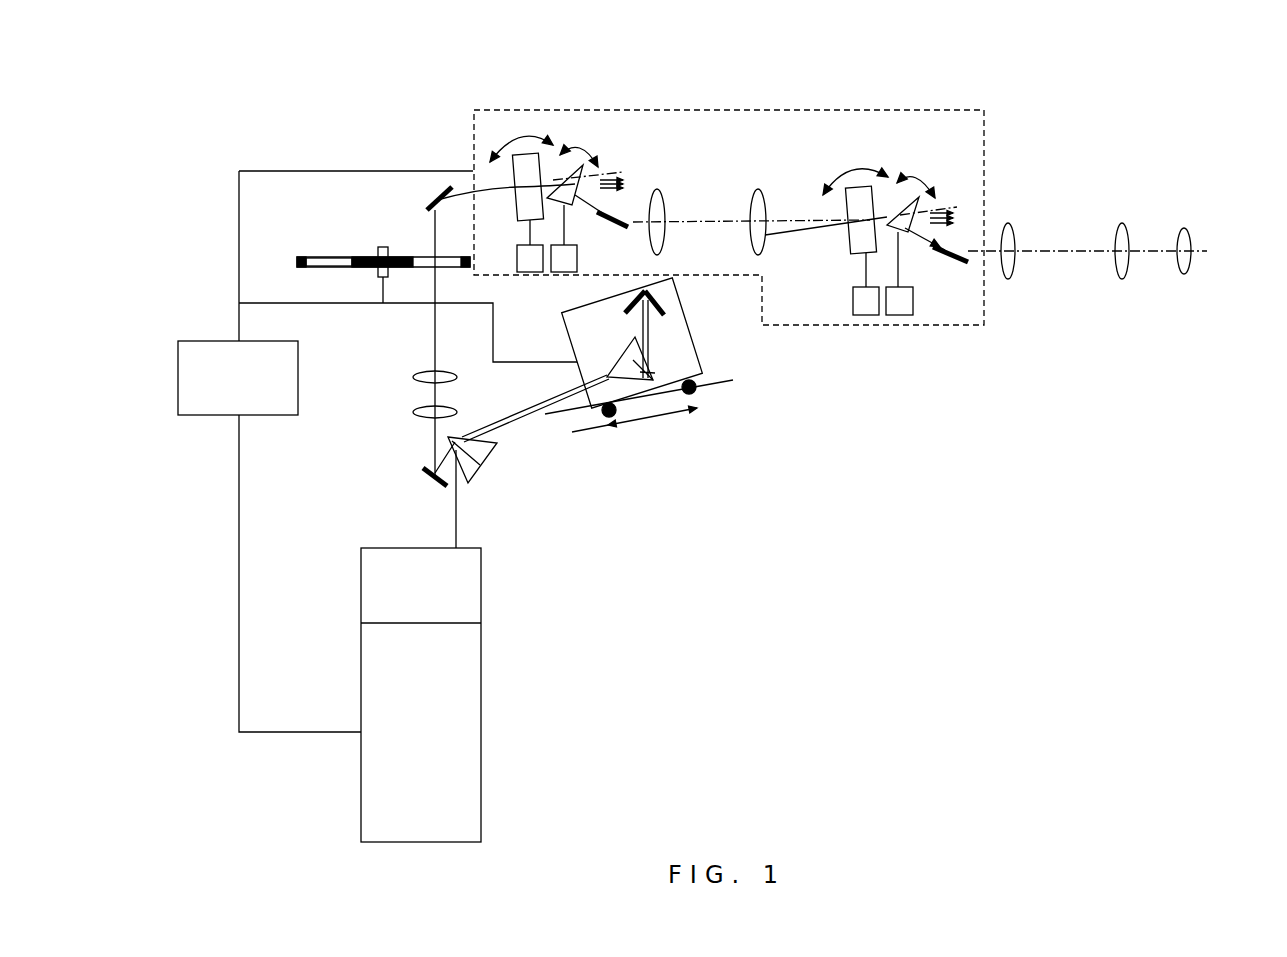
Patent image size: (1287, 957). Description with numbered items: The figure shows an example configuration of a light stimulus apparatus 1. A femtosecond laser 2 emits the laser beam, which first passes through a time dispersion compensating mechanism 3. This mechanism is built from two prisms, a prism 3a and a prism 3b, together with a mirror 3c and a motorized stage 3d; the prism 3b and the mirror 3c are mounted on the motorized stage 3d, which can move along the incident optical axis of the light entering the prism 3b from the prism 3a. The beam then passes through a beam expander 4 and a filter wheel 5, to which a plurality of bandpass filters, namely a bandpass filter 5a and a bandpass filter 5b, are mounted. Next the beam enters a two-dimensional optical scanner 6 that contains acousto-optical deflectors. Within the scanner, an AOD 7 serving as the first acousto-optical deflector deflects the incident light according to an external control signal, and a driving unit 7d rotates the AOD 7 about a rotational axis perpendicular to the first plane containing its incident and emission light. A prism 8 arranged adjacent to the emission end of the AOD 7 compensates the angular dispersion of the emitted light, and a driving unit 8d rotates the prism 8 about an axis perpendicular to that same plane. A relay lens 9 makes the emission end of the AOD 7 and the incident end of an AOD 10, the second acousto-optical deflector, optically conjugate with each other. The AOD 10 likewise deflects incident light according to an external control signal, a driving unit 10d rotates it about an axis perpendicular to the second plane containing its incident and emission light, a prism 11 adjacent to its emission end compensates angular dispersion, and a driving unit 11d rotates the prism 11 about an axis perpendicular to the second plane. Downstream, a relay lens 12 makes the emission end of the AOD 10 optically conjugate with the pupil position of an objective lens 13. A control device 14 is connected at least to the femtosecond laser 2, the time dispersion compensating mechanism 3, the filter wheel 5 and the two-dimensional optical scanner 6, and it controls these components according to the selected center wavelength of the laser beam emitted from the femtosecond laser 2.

The light stimulus apparatus 1 is at (1282, 94).
The femtosecond laser 2 is at (462, 743).
The time dispersion compensating mechanism 3 is at (611, 423).
The prism 3a is at (478, 458).
The prism 3b is at (620, 368).
The mirror 3c is at (660, 315).
The motorized stage 3d is at (688, 325).
The beam expander 4 is at (413, 435).
The filter wheel 5 is at (297, 262).
The bandpass filter 5a is at (419, 258).
The bandpass filter 5b is at (323, 258).
The two-dimensional optical scanner 6 is at (743, 110).
The AOD 7 is at (525, 156).
The driving unit 7d is at (517, 258).
The prism 8 is at (577, 168).
The driving unit 8d is at (577, 258).
The relay lens 9 is at (773, 185).
The AOD 10 is at (858, 188).
The driving unit 10d is at (853, 300).
The prism 11 is at (912, 196).
The driving unit 11d is at (913, 300).
The relay lens 12 is at (1139, 217).
The objective lens 13 is at (1184, 228).
The control device 14 is at (212, 341).